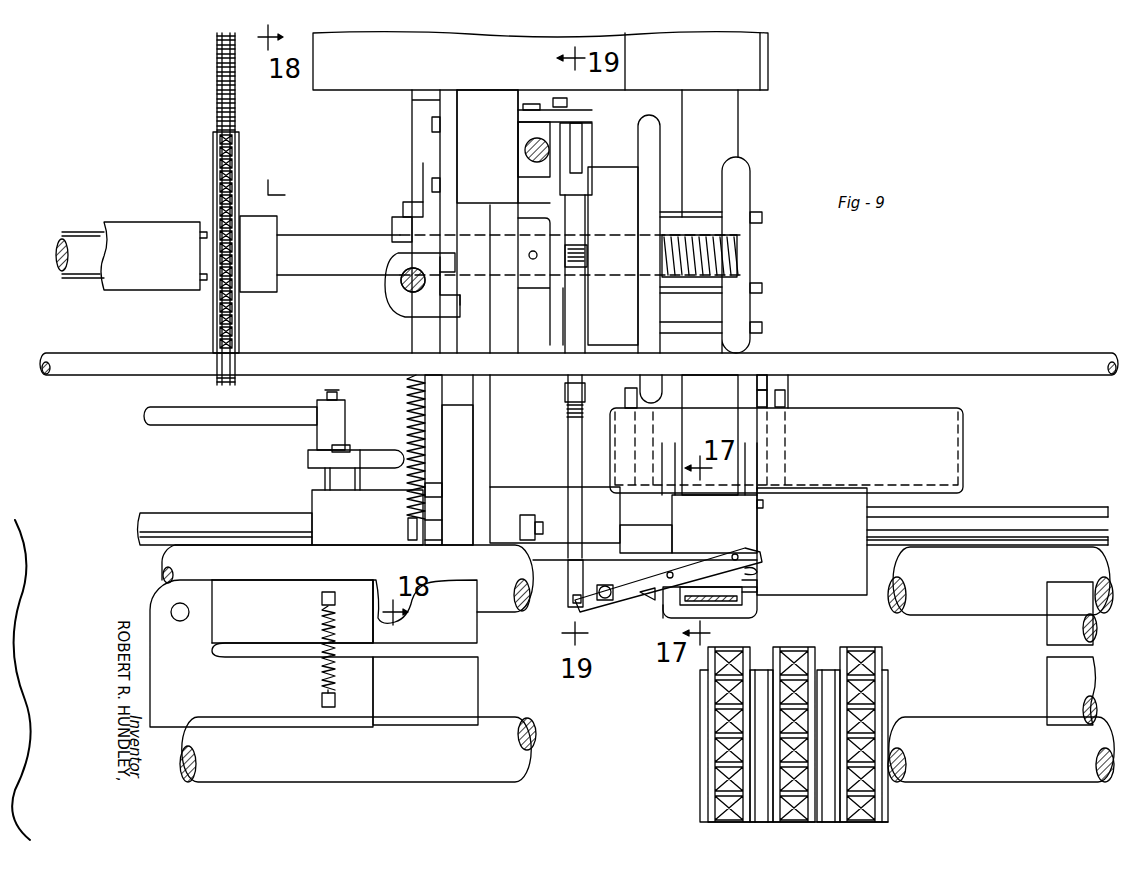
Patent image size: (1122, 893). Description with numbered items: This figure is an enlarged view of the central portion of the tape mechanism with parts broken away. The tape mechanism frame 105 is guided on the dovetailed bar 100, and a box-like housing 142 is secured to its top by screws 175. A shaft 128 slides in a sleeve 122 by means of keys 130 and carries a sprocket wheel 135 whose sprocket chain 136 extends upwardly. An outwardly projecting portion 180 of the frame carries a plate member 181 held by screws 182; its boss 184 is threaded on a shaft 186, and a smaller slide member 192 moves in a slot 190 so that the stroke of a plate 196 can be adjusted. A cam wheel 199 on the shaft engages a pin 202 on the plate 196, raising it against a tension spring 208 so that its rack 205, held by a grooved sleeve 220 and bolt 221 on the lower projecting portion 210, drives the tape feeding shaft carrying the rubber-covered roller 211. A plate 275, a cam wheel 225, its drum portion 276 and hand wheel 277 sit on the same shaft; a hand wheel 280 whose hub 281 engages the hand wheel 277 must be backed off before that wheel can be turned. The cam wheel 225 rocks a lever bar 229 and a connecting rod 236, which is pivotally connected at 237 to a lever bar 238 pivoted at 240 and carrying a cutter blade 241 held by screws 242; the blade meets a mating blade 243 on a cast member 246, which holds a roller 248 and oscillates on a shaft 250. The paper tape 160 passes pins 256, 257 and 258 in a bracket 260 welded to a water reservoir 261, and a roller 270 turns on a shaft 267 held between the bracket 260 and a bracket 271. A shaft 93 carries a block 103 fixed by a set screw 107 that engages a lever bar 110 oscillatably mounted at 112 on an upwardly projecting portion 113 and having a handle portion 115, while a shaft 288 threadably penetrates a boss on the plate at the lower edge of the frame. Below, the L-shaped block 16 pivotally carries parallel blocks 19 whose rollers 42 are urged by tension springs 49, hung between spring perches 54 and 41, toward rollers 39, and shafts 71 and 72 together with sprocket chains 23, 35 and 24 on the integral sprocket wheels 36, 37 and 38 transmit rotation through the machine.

The box-like housing 142 is at (760, 75).
The sprocket chain 136 is at (233, 106).
The sprocket wheel 135 is at (239, 164).
The sleeve 122 is at (138, 224).
The keys 130 is at (75, 232).
The shaft 128 is at (66, 240).
The plate member 181 is at (455, 152).
The screws 182 is at (432, 125).
The outwardly projecting portion 180 is at (483, 90).
The pin 202 is at (403, 205).
The cam wheel 199 is at (398, 222).
The plate 275 is at (558, 310).
The screws 175 is at (560, 98).
The lever bar 229 is at (578, 140).
The cam wheel 225 is at (585, 232).
The drum portion 276 is at (622, 175).
The hand wheel 277 is at (647, 118).
The boss 184 is at (385, 297).
The slot 190 is at (443, 268).
The threaded shaft 186 is at (413, 284).
The smaller slide member 192 is at (462, 300).
The hand wheel 280 is at (750, 178).
The hub 281 is at (696, 222).
The pin 256 is at (762, 218).
The pin 257 is at (762, 288).
The bracket 260 is at (640, 380).
The roller 270 is at (680, 392).
The shaft 267 is at (757, 403).
The pin 258 is at (765, 378).
The bracket 271 is at (790, 387).
The water reservoir 261 is at (965, 430).
The plate 196 is at (442, 398).
The rack 205 is at (473, 437).
The tension spring 208 is at (405, 500).
The peripherally grooved sleeve 220 is at (452, 520).
The shaft 93 is at (290, 425).
The block 103 is at (346, 407).
The set screw 107 is at (327, 393).
The oscillatable mounting 112 is at (347, 445).
The lever bar 110 is at (308, 459).
The handle portion 115 is at (376, 466).
The upwardly projecting portion 113 is at (325, 478).
The tape mechanism frame 105 is at (310, 505).
The dovetailed bar 100 is at (208, 518).
The lower projecting portion 210 is at (513, 498).
The bolt 221 is at (543, 522).
The connecting rod 236 is at (577, 522).
The roller 211 is at (716, 498).
The shaft 250 is at (763, 504).
The shaft 288 is at (1025, 510).
The shaft 72 is at (490, 612).
The L-shaped block 16 is at (208, 727).
The parallel blocks 19 is at (262, 590).
The rollers 42 is at (457, 585).
The spring perches 54 is at (322, 598).
The tension springs 49 is at (322, 640).
The spring perches 41 is at (322, 699).
The rollers 39 is at (478, 684).
The shaft 71 is at (440, 780).
The pivotal connection 237 is at (563, 597).
The lever bar 238 is at (570, 610).
The pivot mounting 240 is at (605, 585).
The screws 242 is at (725, 556).
The cutter blade 241 is at (757, 570).
The roller 248 is at (757, 587).
The paper tape 160 is at (752, 610).
The mating blade 243 is at (660, 608).
The cast member 246 is at (670, 618).
The sprocket chain 23 is at (725, 652).
The sprocket chain 35 is at (795, 650).
The sprocket chain 24 is at (855, 650).
The sprocket wheel 37 is at (822, 670).
The sprocket wheel 36 is at (888, 690).
The sprocket wheel 38 is at (700, 706).